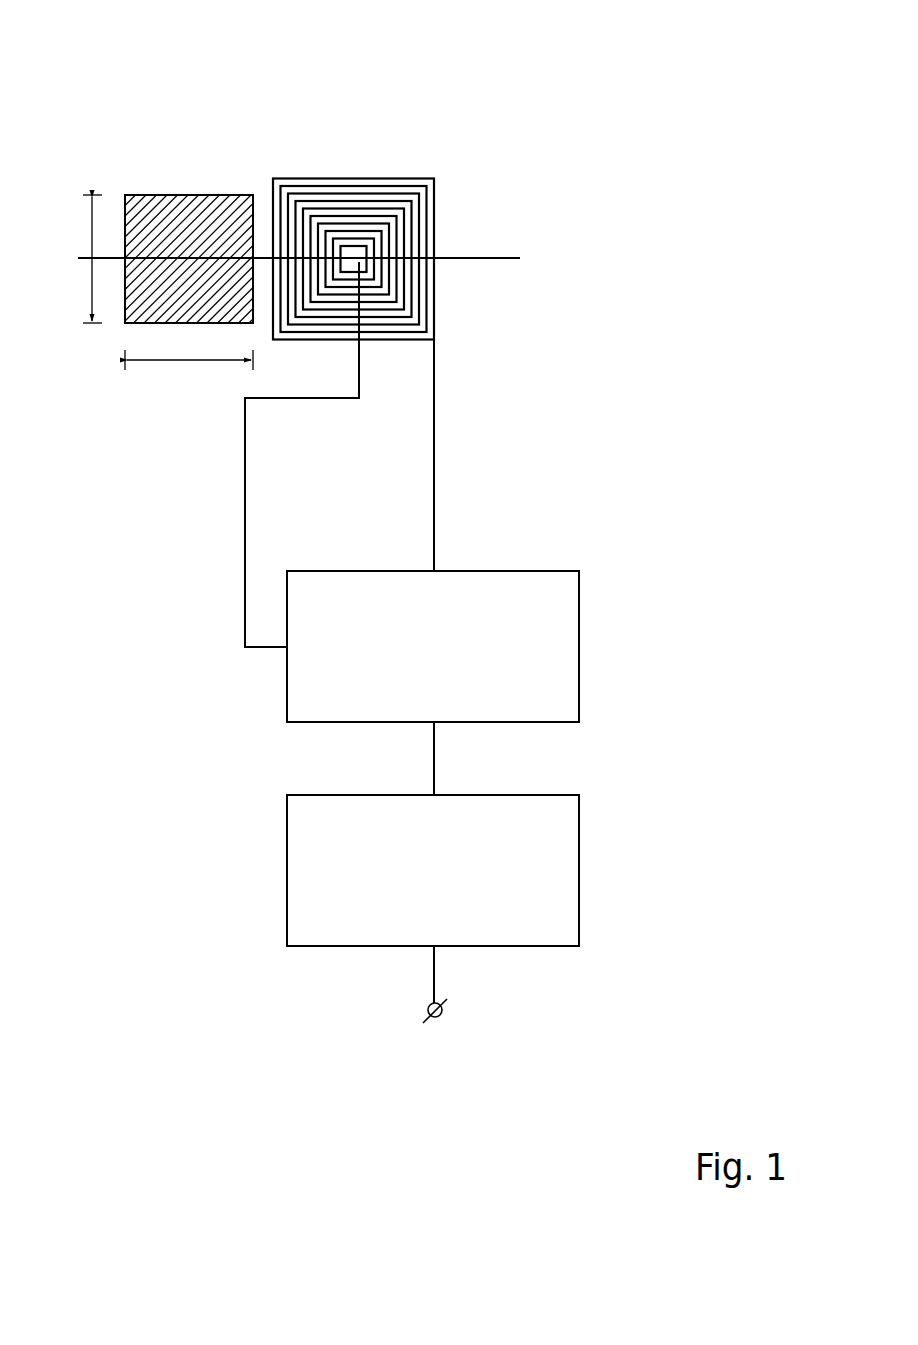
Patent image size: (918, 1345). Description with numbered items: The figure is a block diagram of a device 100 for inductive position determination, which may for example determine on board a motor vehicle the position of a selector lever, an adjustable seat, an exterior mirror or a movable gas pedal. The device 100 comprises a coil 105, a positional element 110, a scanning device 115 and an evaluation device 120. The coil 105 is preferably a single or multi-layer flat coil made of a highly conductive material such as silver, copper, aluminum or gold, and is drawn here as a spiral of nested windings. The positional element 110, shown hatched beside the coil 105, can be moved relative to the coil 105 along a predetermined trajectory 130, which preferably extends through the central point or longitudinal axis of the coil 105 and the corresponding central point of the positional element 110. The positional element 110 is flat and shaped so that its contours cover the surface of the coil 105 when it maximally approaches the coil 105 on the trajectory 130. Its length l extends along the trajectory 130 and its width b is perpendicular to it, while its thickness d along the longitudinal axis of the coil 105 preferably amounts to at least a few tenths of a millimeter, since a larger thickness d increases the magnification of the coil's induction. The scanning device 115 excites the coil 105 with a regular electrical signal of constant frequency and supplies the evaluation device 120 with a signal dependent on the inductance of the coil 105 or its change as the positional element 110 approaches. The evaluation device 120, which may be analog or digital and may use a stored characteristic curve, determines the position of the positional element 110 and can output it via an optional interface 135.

The device for inductive position determination 100 is at (177, 120).
The coil 105 is at (364, 173).
The positional element 110 is at (222, 195).
The scanning device 115 is at (580, 646).
The evaluation device 120 is at (580, 869).
The trajectory 130 is at (482, 258).
The interface 135 is at (442, 1014).
The thickness d is at (124, 193).
The width b is at (87, 259).
The length l is at (190, 352).